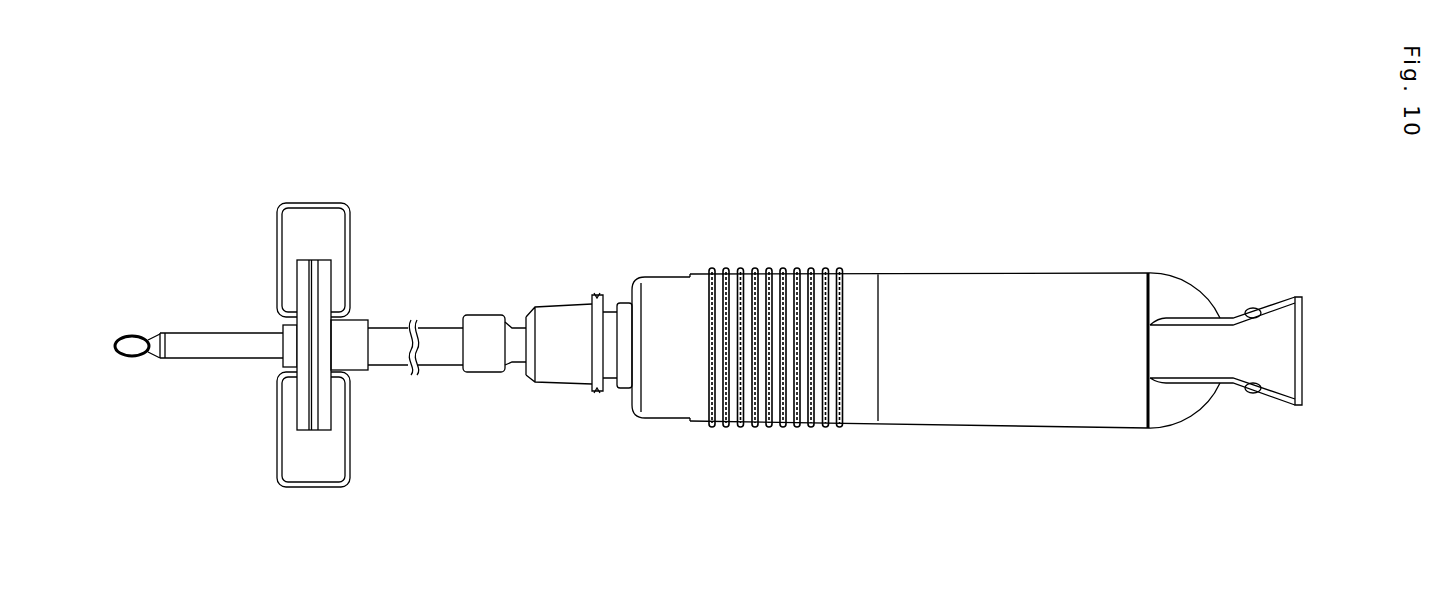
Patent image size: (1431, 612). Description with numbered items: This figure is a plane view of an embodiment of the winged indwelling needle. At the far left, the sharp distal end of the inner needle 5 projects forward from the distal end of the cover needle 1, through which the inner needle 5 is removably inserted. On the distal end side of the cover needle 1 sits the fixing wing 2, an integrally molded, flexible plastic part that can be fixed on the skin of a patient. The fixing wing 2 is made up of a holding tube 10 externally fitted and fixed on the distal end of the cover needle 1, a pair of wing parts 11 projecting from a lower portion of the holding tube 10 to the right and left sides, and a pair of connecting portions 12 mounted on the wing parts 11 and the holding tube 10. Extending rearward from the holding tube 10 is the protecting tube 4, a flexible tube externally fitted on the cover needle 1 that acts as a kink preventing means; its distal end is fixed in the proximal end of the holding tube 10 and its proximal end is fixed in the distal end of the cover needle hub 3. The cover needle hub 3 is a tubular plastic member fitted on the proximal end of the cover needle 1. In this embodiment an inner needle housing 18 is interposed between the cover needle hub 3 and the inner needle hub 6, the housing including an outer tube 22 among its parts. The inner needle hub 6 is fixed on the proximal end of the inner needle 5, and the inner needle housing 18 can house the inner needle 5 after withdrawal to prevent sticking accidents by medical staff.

The cover needle 1 is at (181, 333).
The fixing wing 2 is at (318, 336).
The cover needle hub 3 is at (555, 305).
The protecting tube 4 is at (440, 365).
The inner needle 5 is at (133, 333).
The inner needle hub 6 is at (1275, 303).
The holding tube 10 is at (355, 318).
The wing parts 11 is at (277, 233).
The connecting portions 12 is at (297, 275).
The inner needle housing 18 is at (967, 295).
The outer tube 22 is at (903, 274).